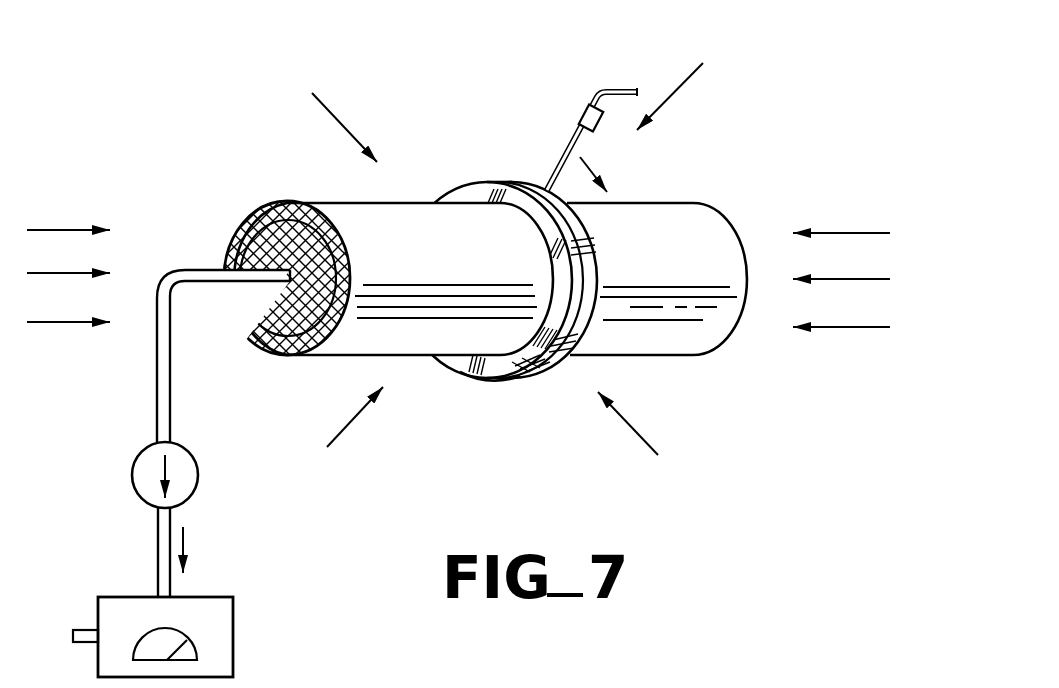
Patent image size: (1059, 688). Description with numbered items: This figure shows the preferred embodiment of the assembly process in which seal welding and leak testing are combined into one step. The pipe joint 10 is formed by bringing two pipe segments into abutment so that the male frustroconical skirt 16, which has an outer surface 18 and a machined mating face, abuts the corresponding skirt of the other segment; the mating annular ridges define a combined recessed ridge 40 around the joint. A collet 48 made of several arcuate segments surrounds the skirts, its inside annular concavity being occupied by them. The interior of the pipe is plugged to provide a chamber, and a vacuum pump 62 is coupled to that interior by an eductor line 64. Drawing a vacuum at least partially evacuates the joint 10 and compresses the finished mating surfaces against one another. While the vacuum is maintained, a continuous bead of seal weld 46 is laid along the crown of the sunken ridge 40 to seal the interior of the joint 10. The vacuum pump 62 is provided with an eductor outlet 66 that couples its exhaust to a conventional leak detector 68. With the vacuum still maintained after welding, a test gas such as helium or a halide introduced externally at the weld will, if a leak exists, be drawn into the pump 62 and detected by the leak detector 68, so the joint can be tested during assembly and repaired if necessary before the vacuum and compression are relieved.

The pipe joint 10 is at (447, 105).
The male frustroconical skirt 16 is at (462, 193).
The outer surface 18 is at (583, 223).
The combined recessed ridge 40 is at (587, 268).
The seal weld 46 is at (513, 185).
The collet 48 is at (490, 370).
The vacuum pump 62 is at (583, 110).
The eductor line 64 is at (158, 393).
The eductor outlet 66 is at (158, 555).
The leak detector 68 is at (233, 627).